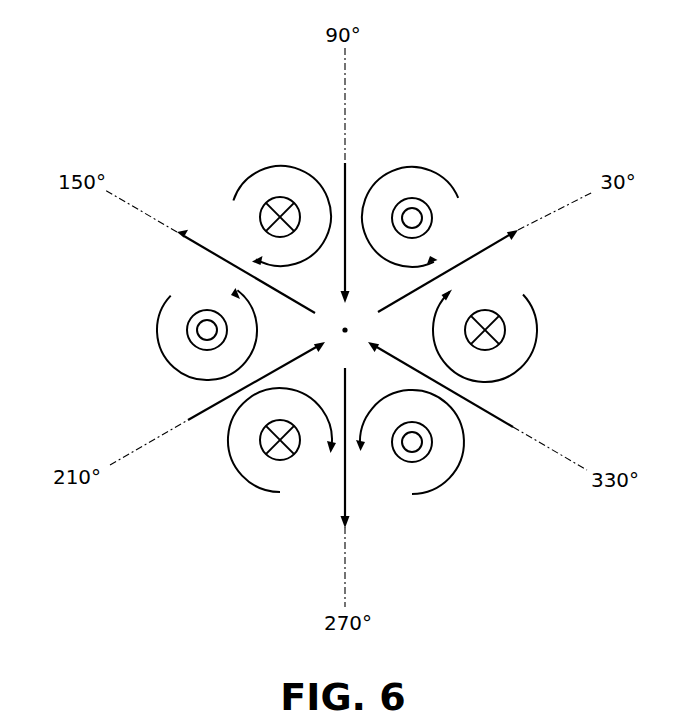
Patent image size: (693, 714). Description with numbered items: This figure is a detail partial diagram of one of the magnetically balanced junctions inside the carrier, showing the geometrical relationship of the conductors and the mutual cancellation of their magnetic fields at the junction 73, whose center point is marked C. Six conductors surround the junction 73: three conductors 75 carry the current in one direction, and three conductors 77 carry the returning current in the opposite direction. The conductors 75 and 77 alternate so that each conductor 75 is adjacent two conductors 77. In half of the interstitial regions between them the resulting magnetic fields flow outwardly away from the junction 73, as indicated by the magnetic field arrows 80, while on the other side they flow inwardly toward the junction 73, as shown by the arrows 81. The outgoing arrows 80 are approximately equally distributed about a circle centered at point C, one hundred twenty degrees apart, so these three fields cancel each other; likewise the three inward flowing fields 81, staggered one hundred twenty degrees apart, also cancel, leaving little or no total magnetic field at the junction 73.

The junction 73 is at (351, 326).
The conductors 75 is at (421, 226).
The conductors 77 is at (262, 225).
The magnetic field arrows 80 is at (185, 238).
The arrows 81 is at (346, 163).